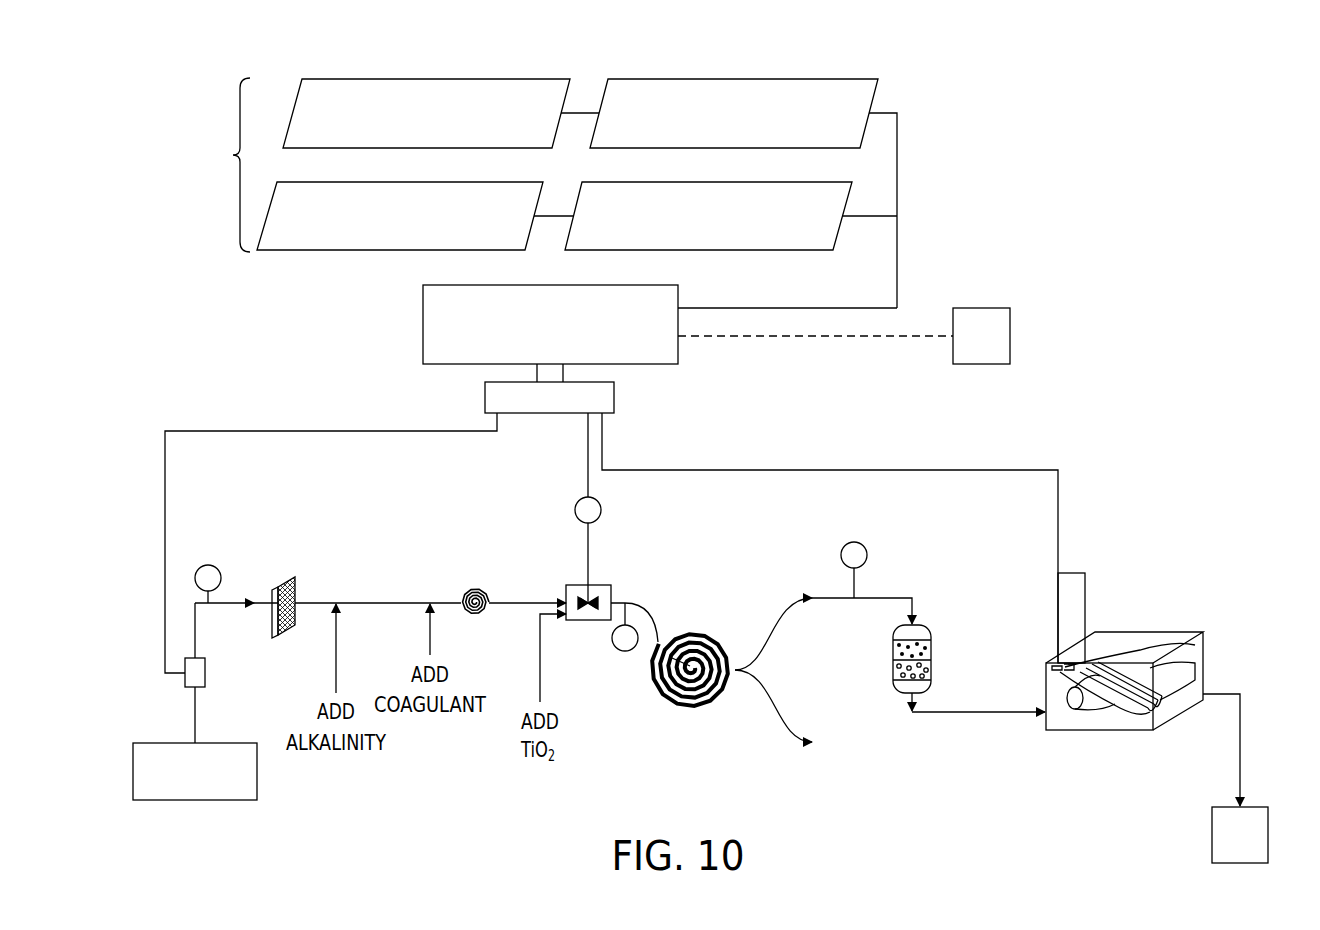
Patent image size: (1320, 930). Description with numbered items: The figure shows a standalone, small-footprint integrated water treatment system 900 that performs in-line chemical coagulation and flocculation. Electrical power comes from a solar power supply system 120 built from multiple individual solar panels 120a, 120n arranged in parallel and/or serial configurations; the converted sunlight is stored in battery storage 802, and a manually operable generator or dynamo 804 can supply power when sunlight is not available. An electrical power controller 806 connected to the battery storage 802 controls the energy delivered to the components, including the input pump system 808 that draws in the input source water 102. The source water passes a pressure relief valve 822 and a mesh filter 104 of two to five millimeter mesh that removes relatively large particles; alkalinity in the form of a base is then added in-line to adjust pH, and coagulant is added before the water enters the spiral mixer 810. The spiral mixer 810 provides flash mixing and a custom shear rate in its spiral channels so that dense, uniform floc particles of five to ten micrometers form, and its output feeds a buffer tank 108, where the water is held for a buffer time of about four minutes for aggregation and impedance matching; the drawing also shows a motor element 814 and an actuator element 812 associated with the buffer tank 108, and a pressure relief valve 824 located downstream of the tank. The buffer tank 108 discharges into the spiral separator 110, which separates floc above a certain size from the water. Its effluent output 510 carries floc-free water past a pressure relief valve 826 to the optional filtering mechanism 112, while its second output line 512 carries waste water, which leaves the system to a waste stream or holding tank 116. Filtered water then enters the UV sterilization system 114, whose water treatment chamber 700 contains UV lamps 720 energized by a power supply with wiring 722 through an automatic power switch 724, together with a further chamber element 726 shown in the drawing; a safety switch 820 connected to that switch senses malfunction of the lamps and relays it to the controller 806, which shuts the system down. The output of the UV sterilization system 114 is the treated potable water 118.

The water treatment system 900 is at (172, 125).
The solar power supply system 120 is at (233, 155).
The solar panel 120a is at (426, 113).
The solar panel 120n is at (708, 216).
The battery storage 802 is at (660, 324).
The generator or dynamo 804 is at (844, 336).
The electrical power controller 806 is at (549, 388).
The input pump system 808 is at (205, 673).
The input source water 102 is at (257, 770).
The pressure relief valve 822 is at (208, 565).
The mesh filter 104 is at (283, 581).
The spiral mixer 810 is at (473, 588).
The motor 814 is at (601, 510).
The valve actuator 812 is at (592, 600).
The buffer tank 108 is at (580, 622).
The pressure relief valve 824 is at (623, 652).
The spiral separator 110 is at (690, 712).
The effluent output 510 is at (773, 622).
The second output line 512 is at (780, 732).
The waste stream or holding tank 116 is at (833, 742).
The pressure relief valve 826 is at (856, 541).
The filtering mechanism 112 is at (892, 663).
The UV sterilization system 114 is at (1086, 655).
The UV lamps 720 is at (1125, 720).
The inlet pipe 726 is at (1085, 672).
The power supply with wiring 722 is at (1050, 668).
The automatic power switch 724 is at (1062, 668).
The safety switch 820 is at (1068, 665).
The treated potable water 118 is at (1240, 835).
The water treatment chamber 700 is at (1127, 813).